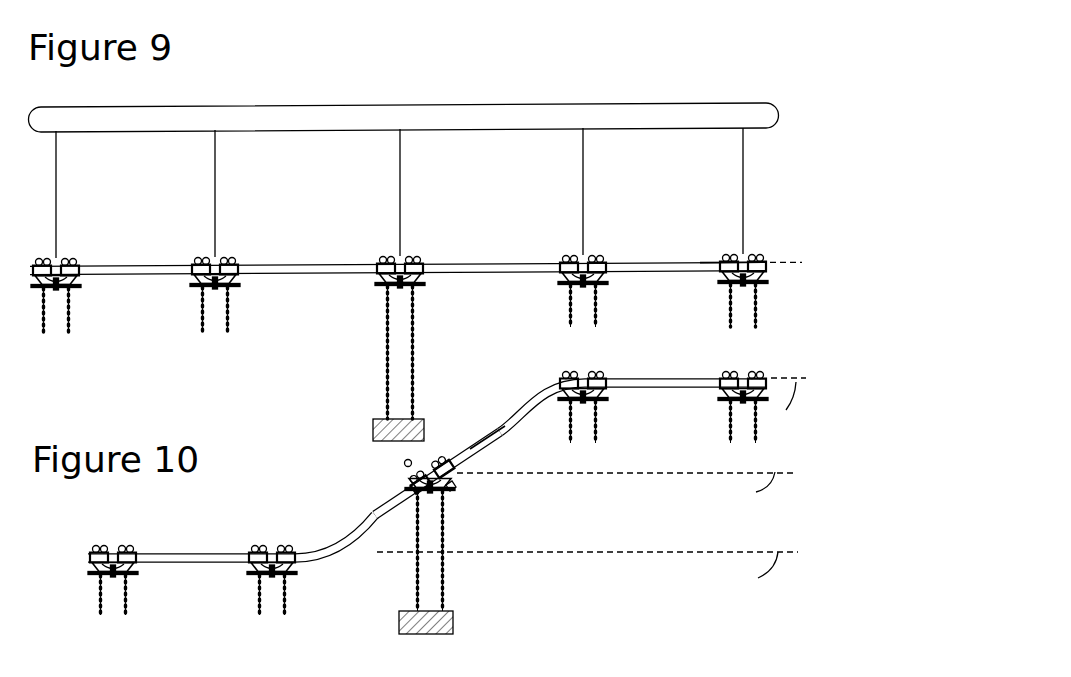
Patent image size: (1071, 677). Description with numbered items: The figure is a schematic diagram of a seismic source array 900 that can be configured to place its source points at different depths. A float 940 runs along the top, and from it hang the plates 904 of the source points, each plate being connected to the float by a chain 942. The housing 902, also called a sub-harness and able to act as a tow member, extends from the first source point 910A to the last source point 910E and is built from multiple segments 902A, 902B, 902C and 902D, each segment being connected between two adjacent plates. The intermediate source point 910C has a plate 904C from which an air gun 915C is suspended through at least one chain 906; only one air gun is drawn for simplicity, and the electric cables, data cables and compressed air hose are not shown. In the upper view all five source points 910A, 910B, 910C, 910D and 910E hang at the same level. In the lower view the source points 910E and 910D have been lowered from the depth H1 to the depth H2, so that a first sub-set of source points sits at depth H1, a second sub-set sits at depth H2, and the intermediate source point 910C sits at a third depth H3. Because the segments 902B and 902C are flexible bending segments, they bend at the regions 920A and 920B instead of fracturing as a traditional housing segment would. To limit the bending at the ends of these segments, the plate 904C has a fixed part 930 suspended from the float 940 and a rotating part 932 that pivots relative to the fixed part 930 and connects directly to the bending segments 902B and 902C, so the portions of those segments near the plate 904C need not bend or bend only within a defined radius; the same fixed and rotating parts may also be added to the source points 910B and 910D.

In FIG. 9, the source array 900 is at (420, 251).
In FIG. 9, the housing 902 is at (416, 265).
In FIG. 9, the housing segment 902A is at (652, 275).
In FIG. 9, the flexible housing segment 902B is at (484, 275).
In FIG. 10, the flexible housing segment 902B is at (474, 442).
In FIG. 9, the flexible housing segment 902C is at (296, 277).
In FIG. 10, the flexible housing segment 902C is at (357, 530).
In FIG. 9, the housing segment 902D is at (124, 277).
In FIG. 9, the plate 904 is at (735, 258).
In FIG. 10, the plate 904C is at (438, 450).
In FIG. 9, the chain 906 is at (756, 298).
In FIG. 9, the first source point 910A is at (761, 253).
In FIG. 10, the first source point 910A is at (768, 392).
In FIG. 9, the source point 910B is at (598, 253).
In FIG. 10, the source point 910B is at (612, 392).
In FIG. 9, the intermediate source point 910C is at (368, 289).
In FIG. 10, the intermediate source point 910C is at (455, 478).
In FIG. 9, the source point 910D is at (206, 253).
In FIG. 10, the source point 910D is at (252, 549).
In FIG. 9, the last source point 910E is at (64, 253).
In FIG. 10, the last source point 910E is at (98, 549).
In FIG. 9, the air gun 915C is at (387, 418).
In FIG. 10, the air gun 915C is at (441, 608).
In FIG. 10, the bending region 920A is at (538, 404).
In FIG. 10, the bending region 920B is at (318, 541).
In FIG. 10, the fixed part 930 is at (405, 465).
In FIG. 10, the rotating part 932 is at (453, 490).
In FIG. 9, the float 940 is at (352, 104).
In FIG. 9, the chain 942 is at (216, 174).
In FIG. 10, the first depth H1 is at (785, 412).
In FIG. 10, the second depth H2 is at (587, 574).
In FIG. 10, the third depth H3 is at (627, 492).